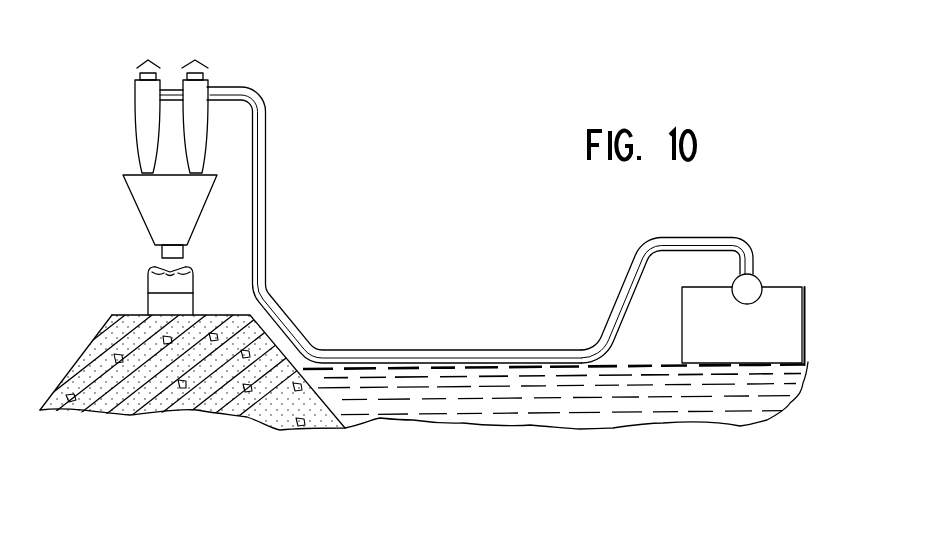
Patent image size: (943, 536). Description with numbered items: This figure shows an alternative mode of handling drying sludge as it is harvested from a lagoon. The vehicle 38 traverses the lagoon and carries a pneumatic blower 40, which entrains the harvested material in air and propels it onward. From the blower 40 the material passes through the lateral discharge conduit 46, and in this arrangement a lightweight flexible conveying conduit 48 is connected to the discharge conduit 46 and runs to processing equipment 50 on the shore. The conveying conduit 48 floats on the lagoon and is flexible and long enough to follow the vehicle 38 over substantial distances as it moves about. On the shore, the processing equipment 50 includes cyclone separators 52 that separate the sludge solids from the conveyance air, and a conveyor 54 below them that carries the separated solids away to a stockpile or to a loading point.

The processing equipment 50 is at (110, 109).
The cyclone separators 52 is at (150, 89).
The conveyor 54 is at (132, 268).
The lightweight flexible conveying conduit 48 is at (487, 352).
The lateral discharge conduit 46 is at (698, 240).
The pneumatic blower 40 is at (770, 270).
The vehicle 38 is at (682, 308).